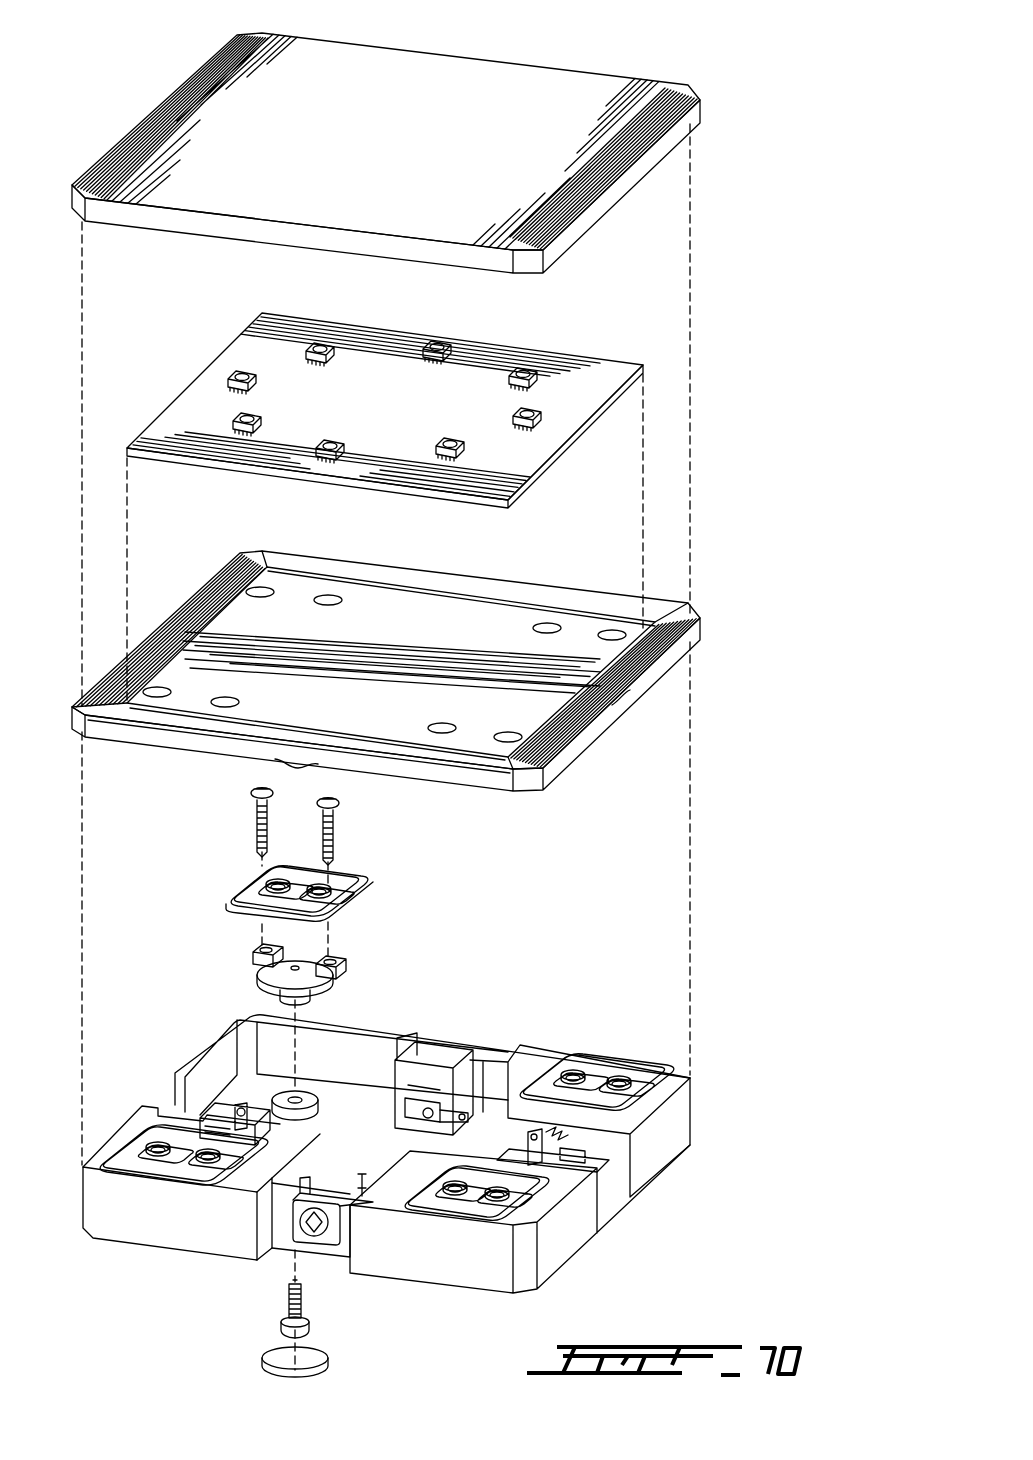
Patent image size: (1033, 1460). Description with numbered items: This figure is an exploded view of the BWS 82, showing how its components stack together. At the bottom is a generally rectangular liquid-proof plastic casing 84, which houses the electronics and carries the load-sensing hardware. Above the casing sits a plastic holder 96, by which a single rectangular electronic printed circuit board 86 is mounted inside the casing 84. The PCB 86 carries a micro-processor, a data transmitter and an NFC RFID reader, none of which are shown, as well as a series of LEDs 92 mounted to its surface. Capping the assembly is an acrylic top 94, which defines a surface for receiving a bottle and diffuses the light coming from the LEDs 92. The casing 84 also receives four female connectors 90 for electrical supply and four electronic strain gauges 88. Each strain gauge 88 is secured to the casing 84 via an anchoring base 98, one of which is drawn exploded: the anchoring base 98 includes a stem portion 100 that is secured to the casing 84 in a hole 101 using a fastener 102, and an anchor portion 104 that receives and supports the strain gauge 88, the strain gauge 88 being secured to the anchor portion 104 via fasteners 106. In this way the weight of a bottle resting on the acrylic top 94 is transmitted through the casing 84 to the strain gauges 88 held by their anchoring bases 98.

The BWS 82 is at (752, 292).
The casing 84 is at (567, 1227).
The printed circuit board 86 is at (588, 378).
The strain gauge 88 is at (375, 886).
The female connector 90 is at (426, 1060).
The LED 92 is at (322, 350).
The acrylic top 94 is at (600, 92).
The plastic holder 96 is at (615, 690).
The anchoring base 98 is at (248, 963).
The stem portion 100 is at (293, 990).
The hole 101 is at (308, 1088).
The fastener 102 is at (302, 1310).
The anchor portion 104 is at (293, 967).
The fasteners 106 is at (335, 828).